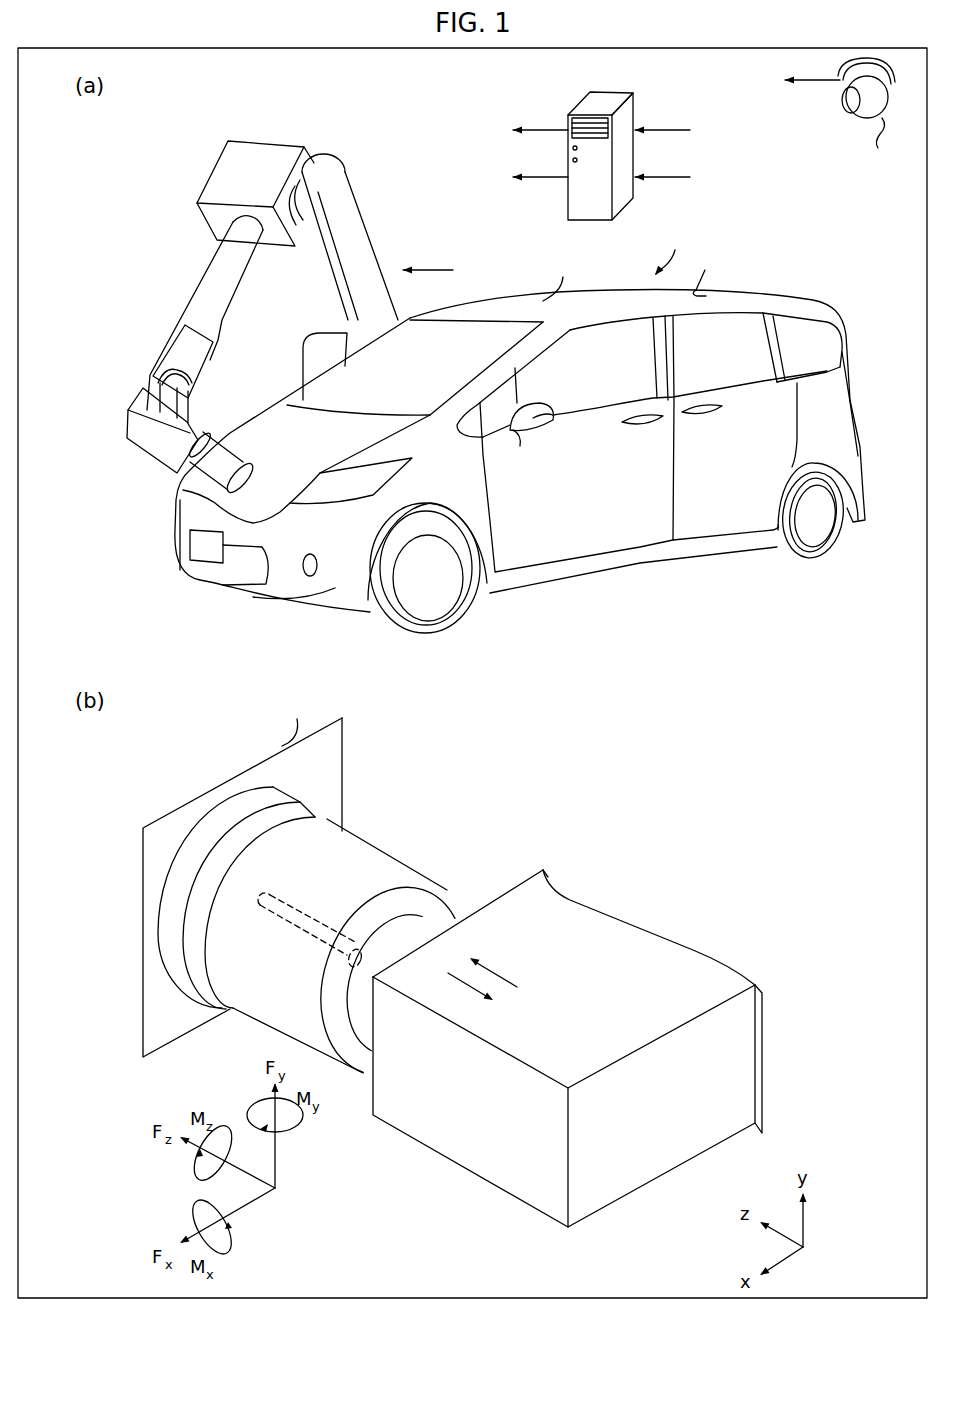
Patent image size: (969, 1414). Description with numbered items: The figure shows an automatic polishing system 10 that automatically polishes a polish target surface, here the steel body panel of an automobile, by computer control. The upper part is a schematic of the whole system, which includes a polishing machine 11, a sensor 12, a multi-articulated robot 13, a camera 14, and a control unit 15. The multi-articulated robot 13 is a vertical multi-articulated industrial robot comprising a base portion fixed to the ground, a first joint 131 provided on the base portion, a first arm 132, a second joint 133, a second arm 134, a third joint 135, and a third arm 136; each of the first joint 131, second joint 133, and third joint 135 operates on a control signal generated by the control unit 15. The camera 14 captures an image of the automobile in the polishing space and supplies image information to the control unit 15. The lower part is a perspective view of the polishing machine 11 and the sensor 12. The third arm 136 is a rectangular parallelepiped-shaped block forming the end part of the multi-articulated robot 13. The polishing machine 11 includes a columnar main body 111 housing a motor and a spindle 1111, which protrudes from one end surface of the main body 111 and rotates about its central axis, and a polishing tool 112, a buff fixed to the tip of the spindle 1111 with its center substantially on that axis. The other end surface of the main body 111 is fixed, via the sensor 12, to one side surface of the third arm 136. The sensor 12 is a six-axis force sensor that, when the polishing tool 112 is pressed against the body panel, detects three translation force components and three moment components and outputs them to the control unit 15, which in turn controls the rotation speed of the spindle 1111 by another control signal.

The automatic polishing system 10 is at (410, 110).
The polishing machine 11 is at (260, 460).
The sensor 12 is at (428, 928).
The multi-articulated robot 13 is at (290, 123).
The camera 14 is at (798, 115).
The control unit 15 is at (618, 92).
The first joint 131 is at (305, 372).
The first arm 132 is at (366, 223).
The second joint 133 is at (313, 156).
The second arm 134 is at (190, 272).
The third joint 135 is at (153, 381).
The third arm 136 is at (150, 458).
The main body 111 is at (356, 840).
The polishing tool 112 is at (278, 788).
The spindle 1111 is at (318, 918).